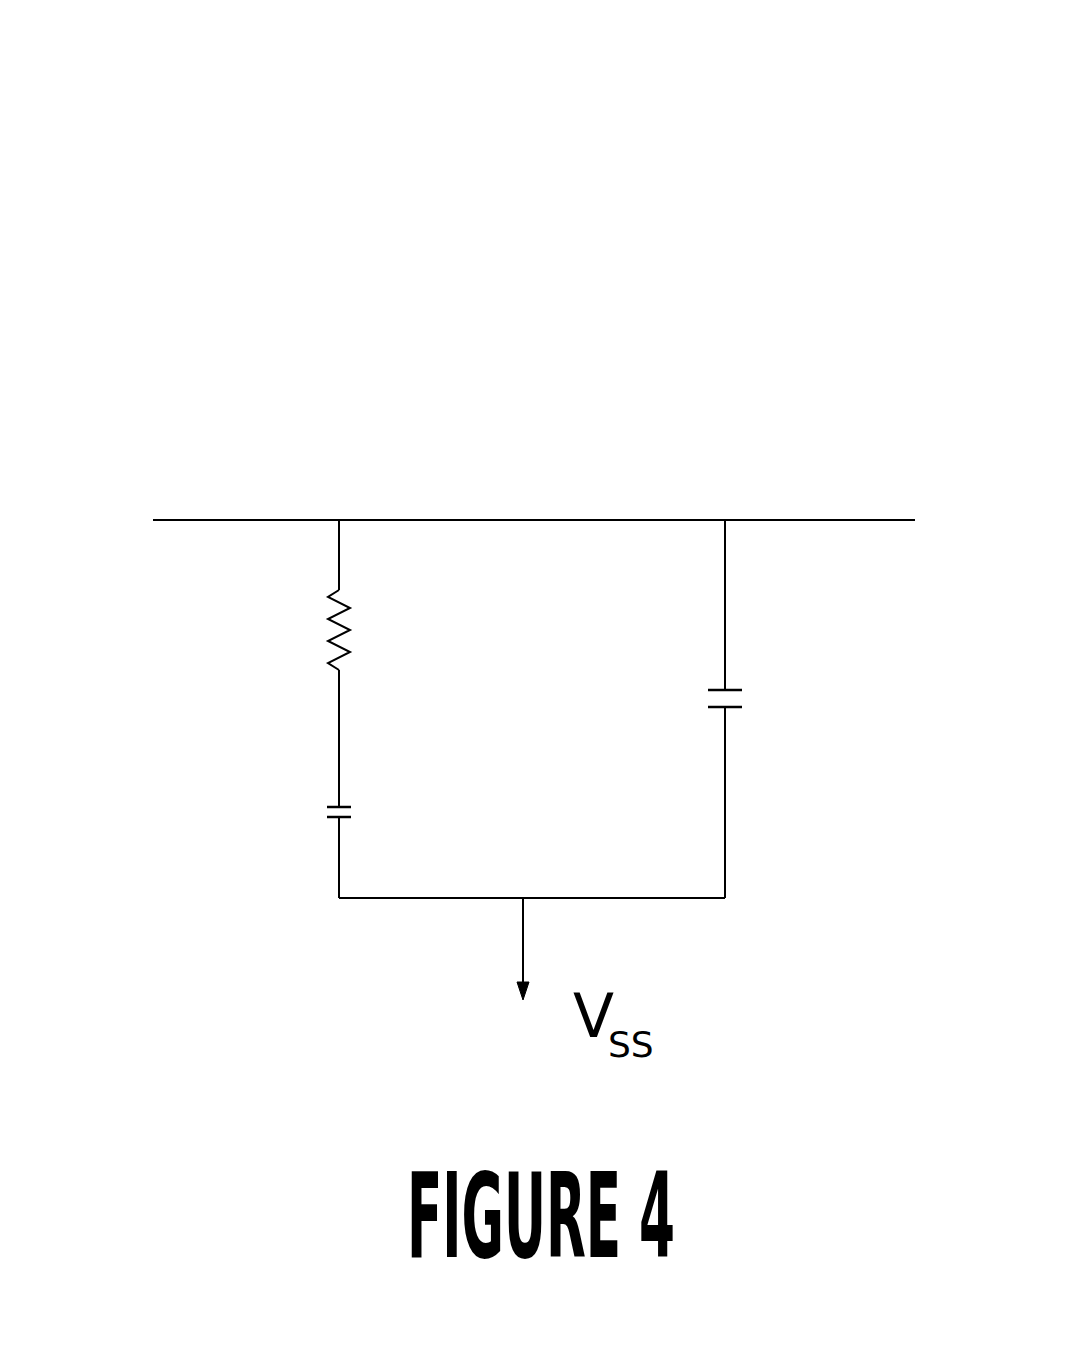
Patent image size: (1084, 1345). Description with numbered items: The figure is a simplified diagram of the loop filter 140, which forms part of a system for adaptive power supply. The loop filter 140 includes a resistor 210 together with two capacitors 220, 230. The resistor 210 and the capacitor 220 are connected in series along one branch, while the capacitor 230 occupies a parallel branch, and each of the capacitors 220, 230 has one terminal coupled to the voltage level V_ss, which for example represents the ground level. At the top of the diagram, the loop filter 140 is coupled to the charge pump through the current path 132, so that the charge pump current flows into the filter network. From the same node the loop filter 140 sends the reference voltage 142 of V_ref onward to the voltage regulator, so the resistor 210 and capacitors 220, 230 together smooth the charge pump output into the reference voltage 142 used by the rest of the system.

The loop filter 140 is at (158, 228).
The current path 132 is at (235, 525).
The reference voltage 142 is at (833, 518).
The resistor 210 is at (337, 623).
The capacitor 220 is at (353, 813).
The capacitor 230 is at (730, 712).